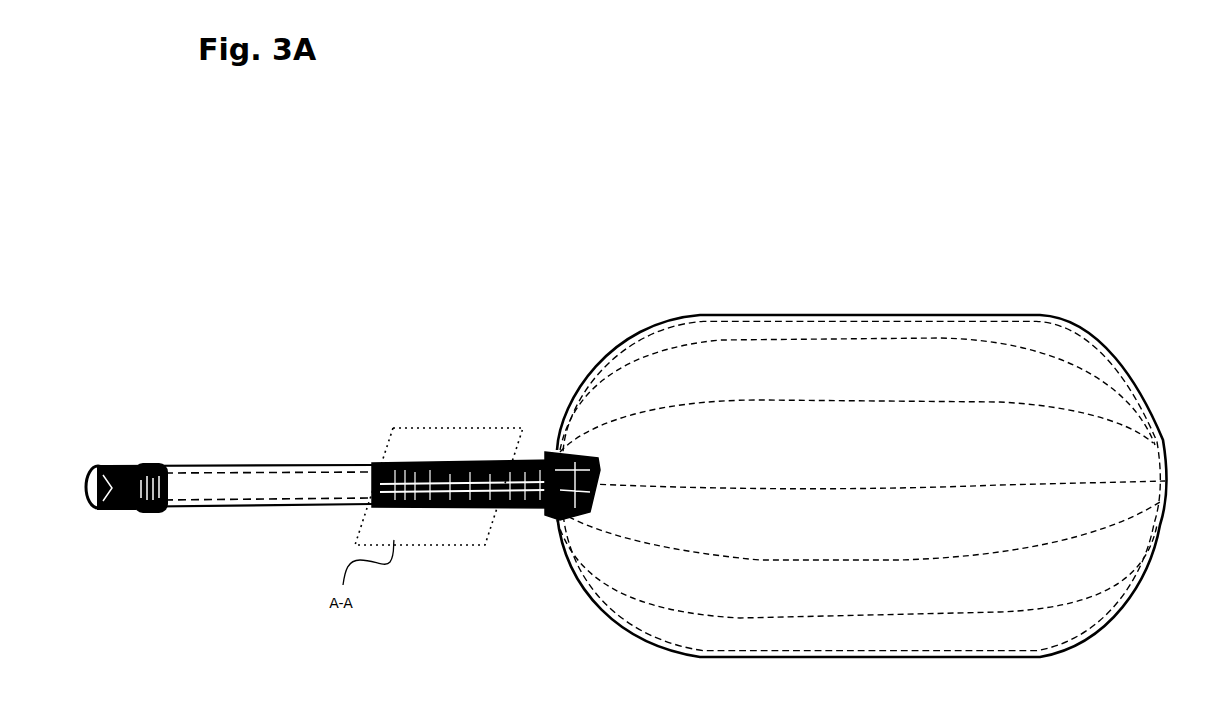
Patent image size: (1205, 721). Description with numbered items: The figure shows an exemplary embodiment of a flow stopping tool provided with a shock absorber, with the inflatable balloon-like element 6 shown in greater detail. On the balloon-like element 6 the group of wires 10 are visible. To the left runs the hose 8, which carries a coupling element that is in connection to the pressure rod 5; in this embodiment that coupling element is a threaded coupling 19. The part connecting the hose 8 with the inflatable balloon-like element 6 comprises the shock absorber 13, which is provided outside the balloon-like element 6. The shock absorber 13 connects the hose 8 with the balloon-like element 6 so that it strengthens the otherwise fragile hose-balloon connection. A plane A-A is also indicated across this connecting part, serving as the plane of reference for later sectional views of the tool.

The pressure rod 5 is at (103, 470).
The threaded coupling 19 is at (150, 465).
The hose 8 is at (250, 485).
The shock absorber 13 is at (445, 603).
The group of wires 10 is at (791, 340).
The balloon-like element 6 is at (882, 383).